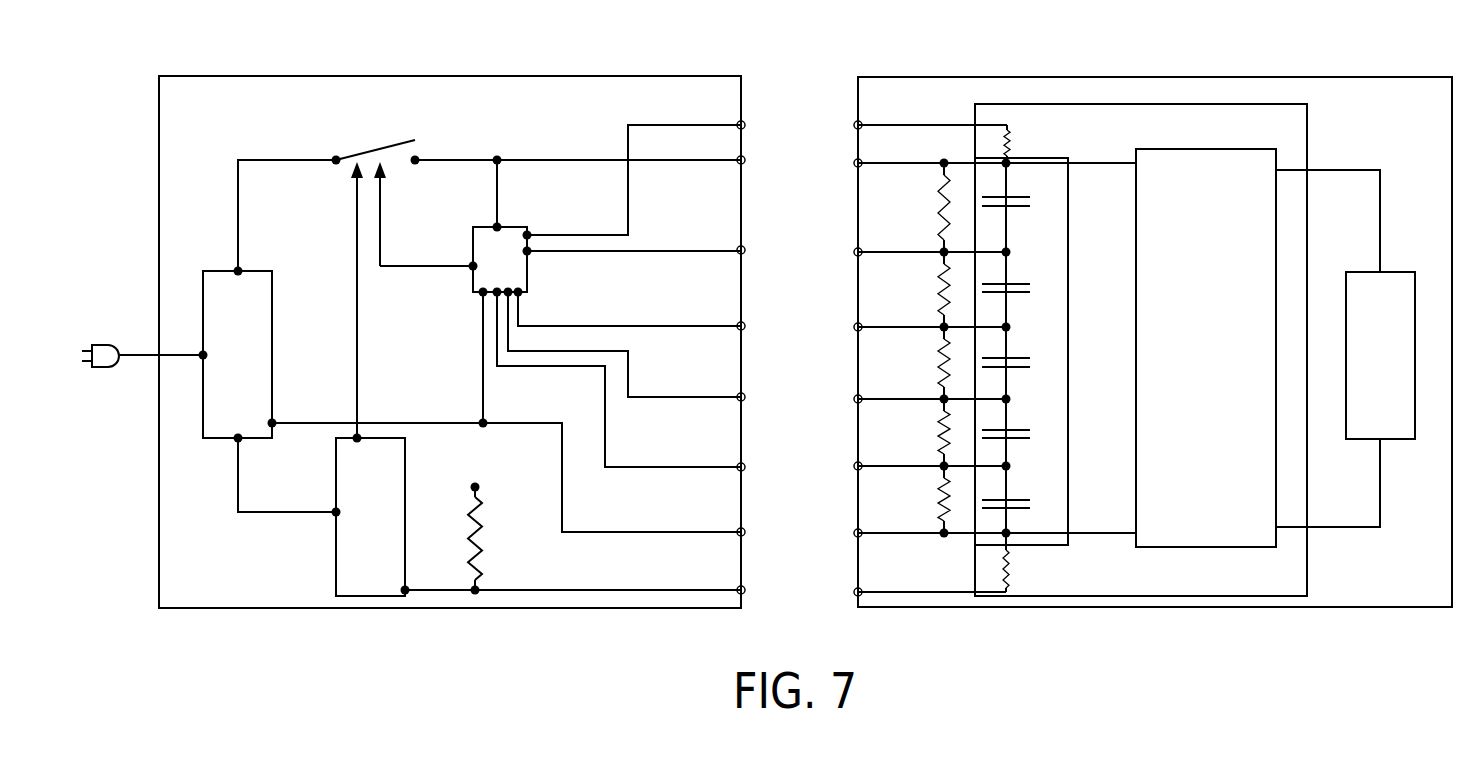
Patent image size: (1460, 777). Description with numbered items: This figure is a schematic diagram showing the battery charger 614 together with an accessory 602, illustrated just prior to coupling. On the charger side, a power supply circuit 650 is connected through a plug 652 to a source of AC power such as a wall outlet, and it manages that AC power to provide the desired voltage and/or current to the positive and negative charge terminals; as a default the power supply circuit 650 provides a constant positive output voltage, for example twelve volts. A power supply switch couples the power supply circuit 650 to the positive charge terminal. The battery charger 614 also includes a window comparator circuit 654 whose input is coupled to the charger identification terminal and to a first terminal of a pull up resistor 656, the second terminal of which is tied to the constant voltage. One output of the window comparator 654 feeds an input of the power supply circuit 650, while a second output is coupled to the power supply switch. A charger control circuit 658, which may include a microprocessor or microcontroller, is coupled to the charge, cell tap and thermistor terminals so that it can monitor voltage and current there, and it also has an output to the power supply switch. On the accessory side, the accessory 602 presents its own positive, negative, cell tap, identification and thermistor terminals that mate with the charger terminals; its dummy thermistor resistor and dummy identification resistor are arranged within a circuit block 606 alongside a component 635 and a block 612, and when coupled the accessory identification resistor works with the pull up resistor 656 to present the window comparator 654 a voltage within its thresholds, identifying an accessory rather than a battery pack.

The battery charger 614 is at (413, 324).
The accessory 602 is at (1153, 323).
The plug 652 is at (101, 345).
The power supply circuit 650 is at (237, 354).
The window comparator circuit 654 is at (370, 517).
The pull up resistor 656 is at (491, 528).
The charger control circuit 658 is at (500, 259).
The battery pack 606 is at (1141, 350).
The controller 635 is at (1206, 348).
The load / accessory component 612 is at (1345, 348).